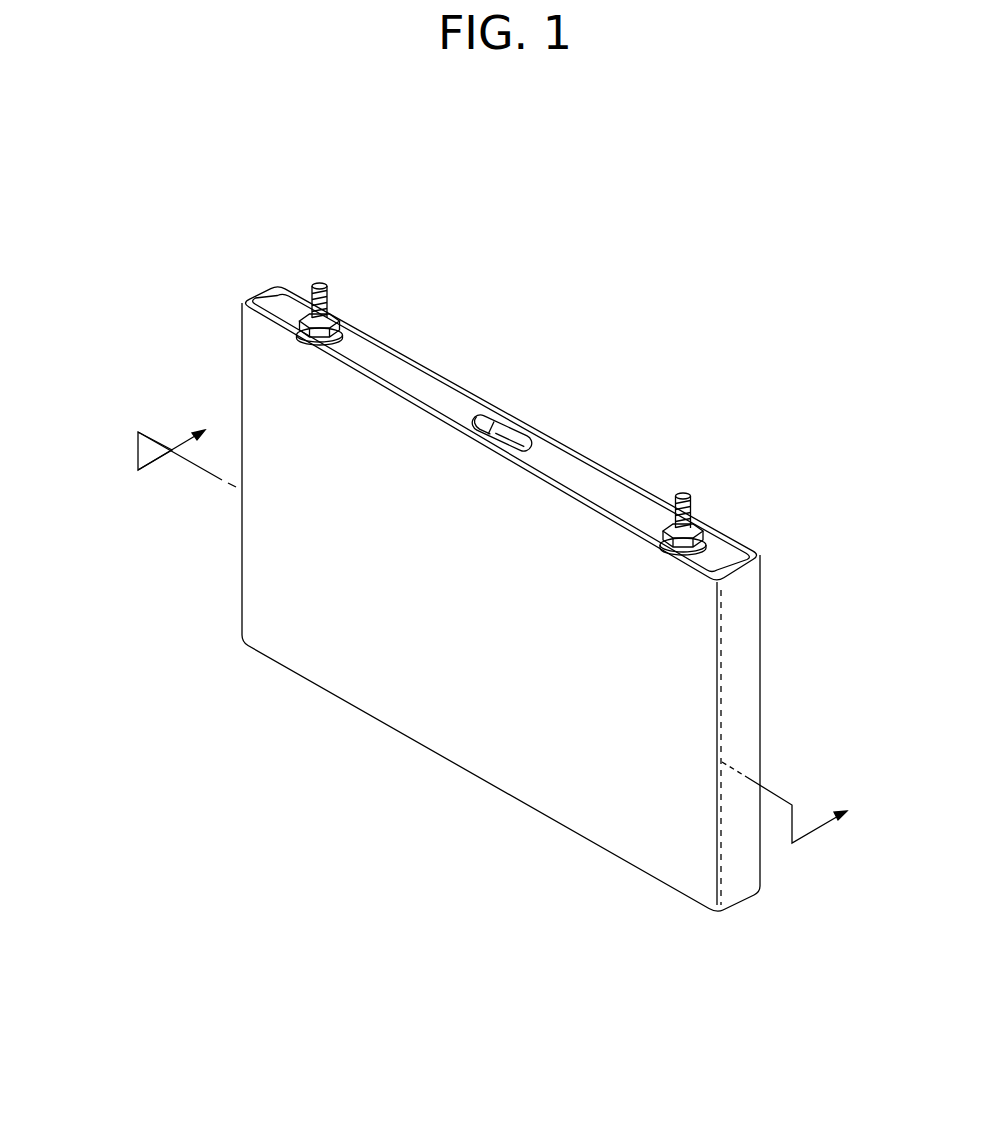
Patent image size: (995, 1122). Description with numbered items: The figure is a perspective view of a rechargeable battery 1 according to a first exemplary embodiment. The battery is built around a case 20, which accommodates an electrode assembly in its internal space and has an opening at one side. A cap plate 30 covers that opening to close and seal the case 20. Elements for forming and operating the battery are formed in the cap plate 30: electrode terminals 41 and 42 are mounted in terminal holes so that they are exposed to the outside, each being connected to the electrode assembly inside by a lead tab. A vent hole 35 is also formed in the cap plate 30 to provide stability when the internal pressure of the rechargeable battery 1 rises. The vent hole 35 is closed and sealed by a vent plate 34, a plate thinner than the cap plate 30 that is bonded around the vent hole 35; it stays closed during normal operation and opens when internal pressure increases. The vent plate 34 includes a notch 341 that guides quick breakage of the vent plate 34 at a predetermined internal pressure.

The rechargeable battery 1 is at (624, 367).
The case 20 is at (480, 762).
The cap plate 30 is at (591, 483).
The vent plate 34 is at (504, 378).
The notch 341 is at (501, 431).
The vent hole 35 is at (474, 416).
The electrode terminal 41 is at (322, 283).
The electrode terminal 42 is at (681, 495).